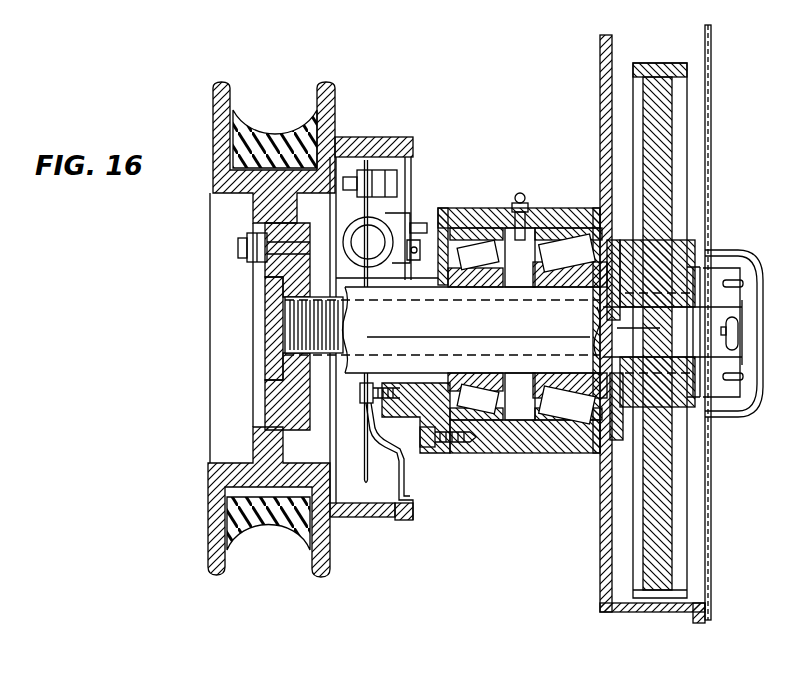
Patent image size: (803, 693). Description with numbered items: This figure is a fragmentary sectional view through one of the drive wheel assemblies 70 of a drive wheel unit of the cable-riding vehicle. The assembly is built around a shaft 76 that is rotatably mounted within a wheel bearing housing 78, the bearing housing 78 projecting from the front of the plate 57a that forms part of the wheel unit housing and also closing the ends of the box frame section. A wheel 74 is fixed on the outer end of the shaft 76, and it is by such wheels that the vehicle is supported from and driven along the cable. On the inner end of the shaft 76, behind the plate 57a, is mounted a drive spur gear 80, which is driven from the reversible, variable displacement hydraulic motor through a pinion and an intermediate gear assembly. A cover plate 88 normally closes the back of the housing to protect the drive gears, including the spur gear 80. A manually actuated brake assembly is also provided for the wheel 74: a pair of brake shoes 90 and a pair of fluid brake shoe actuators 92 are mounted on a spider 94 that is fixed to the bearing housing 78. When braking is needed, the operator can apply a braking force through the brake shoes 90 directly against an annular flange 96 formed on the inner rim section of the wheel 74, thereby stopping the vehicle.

The plate 57a is at (602, 88).
The drive wheel assembly 70 is at (356, 587).
The wheel 74 is at (208, 559).
The shaft 76 is at (407, 323).
The wheel bearing housing 78 is at (508, 453).
The drive spur gear 80 is at (643, 577).
The cover plate 88 is at (709, 567).
The brake shoes 90 is at (357, 441).
The fluid brake shoe actuators 92 is at (368, 242).
The spider 94 is at (405, 463).
The annular flange 96 is at (384, 350).